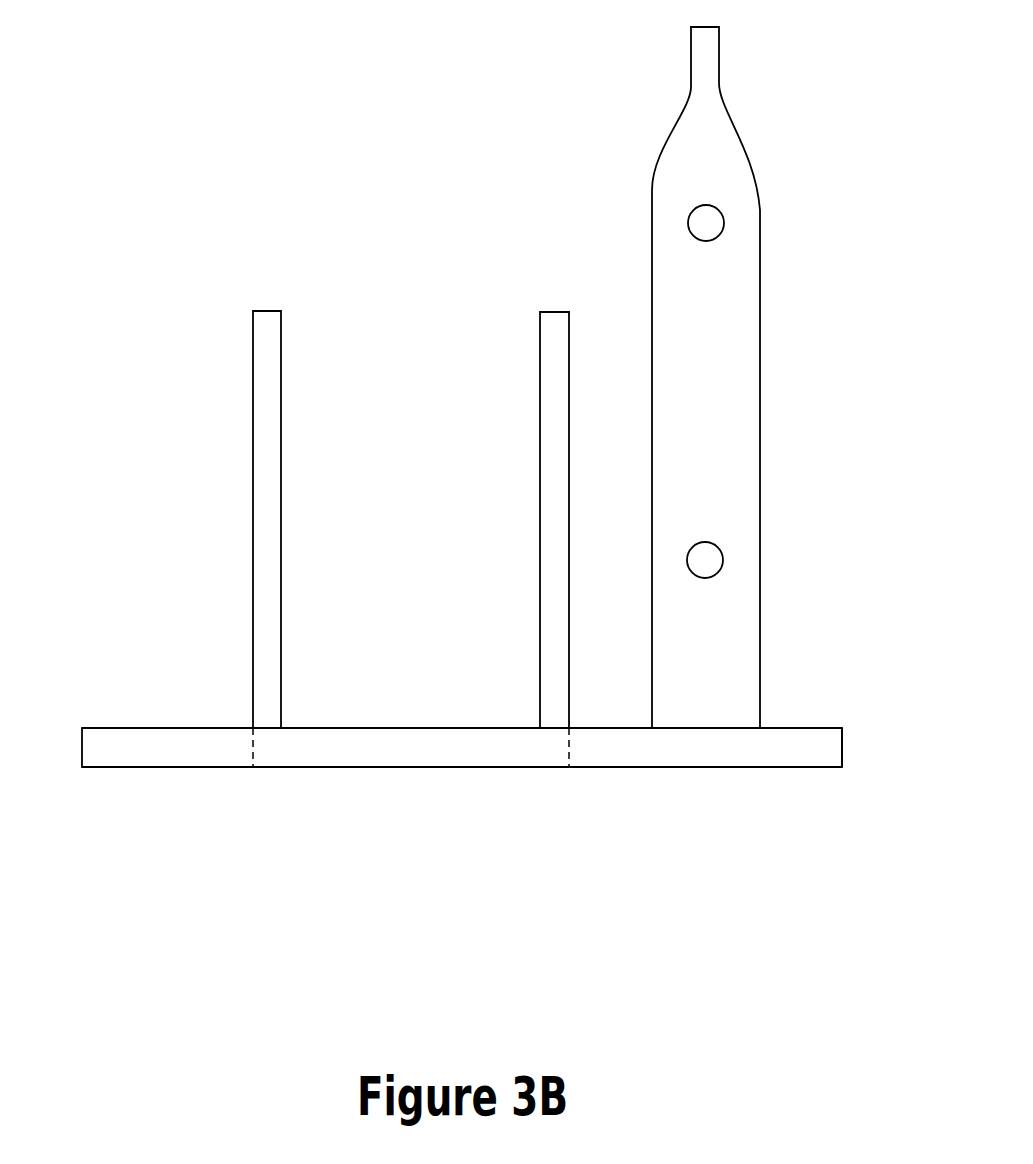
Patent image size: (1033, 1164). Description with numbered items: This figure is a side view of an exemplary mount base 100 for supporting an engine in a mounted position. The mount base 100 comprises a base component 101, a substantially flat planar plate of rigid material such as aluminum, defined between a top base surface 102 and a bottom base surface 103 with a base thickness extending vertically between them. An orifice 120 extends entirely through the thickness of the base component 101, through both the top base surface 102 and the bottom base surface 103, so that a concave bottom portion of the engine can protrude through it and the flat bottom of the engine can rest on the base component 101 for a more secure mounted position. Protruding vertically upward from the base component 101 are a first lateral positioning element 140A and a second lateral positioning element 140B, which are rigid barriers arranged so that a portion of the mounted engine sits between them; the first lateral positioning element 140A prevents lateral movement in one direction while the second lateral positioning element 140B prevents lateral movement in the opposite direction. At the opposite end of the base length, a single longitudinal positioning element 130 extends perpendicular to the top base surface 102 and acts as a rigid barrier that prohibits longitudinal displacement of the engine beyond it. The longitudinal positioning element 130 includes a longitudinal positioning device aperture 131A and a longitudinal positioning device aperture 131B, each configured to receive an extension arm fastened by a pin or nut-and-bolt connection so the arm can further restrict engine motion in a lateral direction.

The mount base 100 is at (80, 232).
The base component 101 is at (876, 739).
The top base surface 102 is at (162, 728).
The bottom base surface 103 is at (187, 767).
The orifice 120 is at (443, 755).
The longitudinal positioning element 130 is at (718, 423).
The longitudinal positioning device aperture 131A is at (703, 220).
The longitudinal positioning device aperture 131B is at (706, 558).
The first lateral positioning element 140A is at (252, 430).
The second lateral positioning element 140B is at (539, 443).